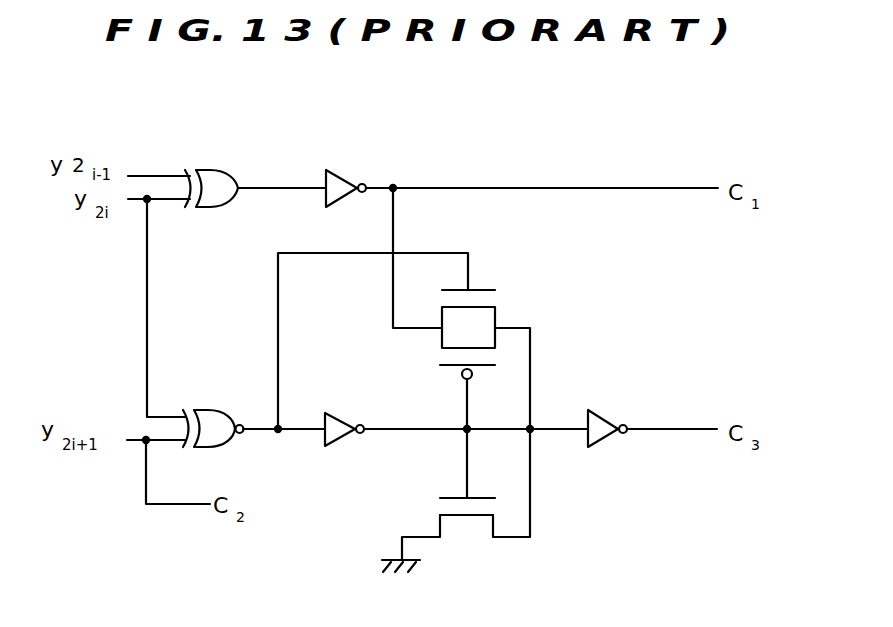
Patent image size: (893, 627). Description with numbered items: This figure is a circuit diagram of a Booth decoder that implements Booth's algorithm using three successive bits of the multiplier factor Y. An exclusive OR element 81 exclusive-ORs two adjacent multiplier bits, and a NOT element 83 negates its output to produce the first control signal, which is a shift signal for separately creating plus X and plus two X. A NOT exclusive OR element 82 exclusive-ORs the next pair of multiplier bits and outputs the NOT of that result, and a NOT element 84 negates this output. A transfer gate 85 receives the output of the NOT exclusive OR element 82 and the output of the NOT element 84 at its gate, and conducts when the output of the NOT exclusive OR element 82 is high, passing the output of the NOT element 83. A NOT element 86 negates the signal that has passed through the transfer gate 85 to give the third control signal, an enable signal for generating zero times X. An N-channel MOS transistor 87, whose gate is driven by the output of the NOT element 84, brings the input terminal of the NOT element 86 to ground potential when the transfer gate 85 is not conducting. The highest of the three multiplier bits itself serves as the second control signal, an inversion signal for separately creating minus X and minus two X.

The exclusive OR element 81 is at (212, 176).
The NOT exclusive OR element 82 is at (210, 415).
The NOT element 83 is at (337, 172).
The NOT element 84 is at (335, 415).
The transfer gate 85 is at (487, 316).
The NOT element 86 is at (603, 418).
The N-channel MOS transistor 87 is at (465, 522).